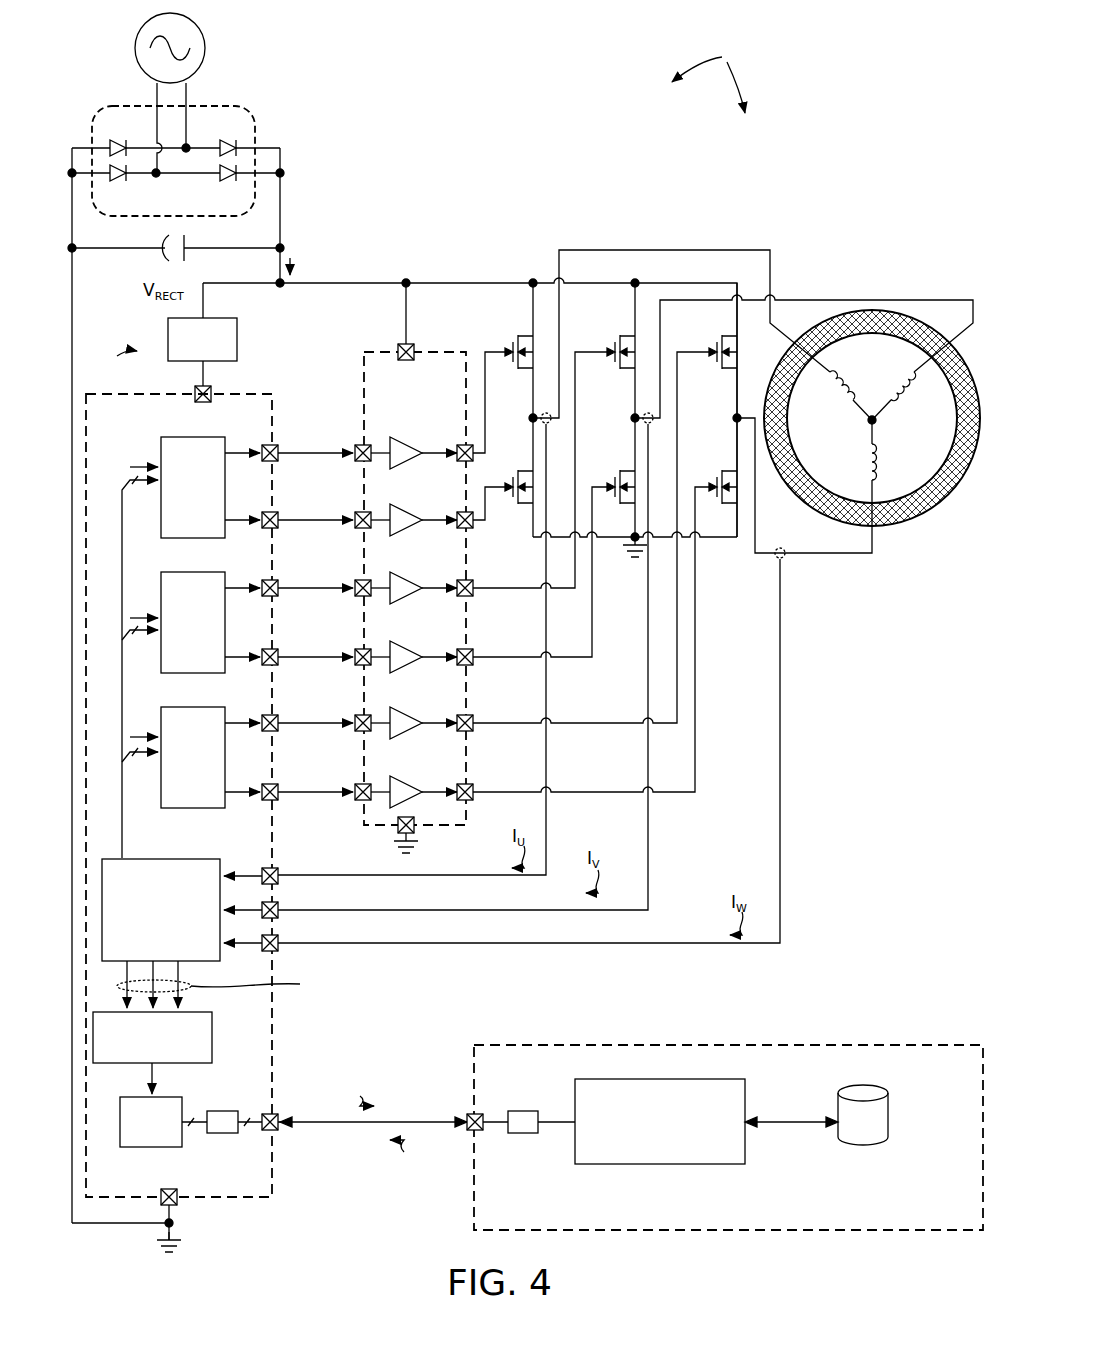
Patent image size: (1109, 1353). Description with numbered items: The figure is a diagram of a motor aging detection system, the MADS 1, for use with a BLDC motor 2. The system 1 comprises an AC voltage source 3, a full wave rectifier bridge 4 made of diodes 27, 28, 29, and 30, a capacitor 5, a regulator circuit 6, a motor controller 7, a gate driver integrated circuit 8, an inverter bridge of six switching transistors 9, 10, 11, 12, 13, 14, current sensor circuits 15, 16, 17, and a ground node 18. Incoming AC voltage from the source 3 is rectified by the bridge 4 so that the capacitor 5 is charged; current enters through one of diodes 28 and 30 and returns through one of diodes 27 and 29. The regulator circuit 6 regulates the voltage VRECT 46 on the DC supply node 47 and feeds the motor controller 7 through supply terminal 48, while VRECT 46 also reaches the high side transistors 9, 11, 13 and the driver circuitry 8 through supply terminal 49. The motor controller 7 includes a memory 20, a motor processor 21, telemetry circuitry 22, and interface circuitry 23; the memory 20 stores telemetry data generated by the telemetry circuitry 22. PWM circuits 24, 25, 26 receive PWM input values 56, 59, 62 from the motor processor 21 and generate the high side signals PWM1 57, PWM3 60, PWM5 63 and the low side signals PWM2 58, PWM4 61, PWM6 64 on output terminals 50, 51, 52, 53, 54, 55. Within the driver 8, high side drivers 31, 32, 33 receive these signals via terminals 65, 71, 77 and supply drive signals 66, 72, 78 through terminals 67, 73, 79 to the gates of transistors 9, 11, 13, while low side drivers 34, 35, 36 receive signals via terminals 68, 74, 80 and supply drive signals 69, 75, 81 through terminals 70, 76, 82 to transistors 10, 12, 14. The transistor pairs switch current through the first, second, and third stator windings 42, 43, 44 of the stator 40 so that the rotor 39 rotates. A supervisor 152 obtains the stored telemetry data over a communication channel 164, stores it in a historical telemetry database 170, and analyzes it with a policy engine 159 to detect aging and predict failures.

The MADS 1 is at (708, 75).
The BLDC motor 2 is at (872, 425).
The AC voltage source 3 is at (206, 50).
The full wave rectifier bridge 4 is at (255, 125).
The capacitor 5 is at (184, 245).
The regulator circuit 6 is at (202, 340).
The motor controller 7 is at (256, 1200).
The gate driver integrated circuit 8 is at (449, 350).
The high side N-channel field effect transistor 9 is at (525, 334).
The low side N-channel field effect transistor 10 is at (523, 470).
The high side N-channel field effect transistor 11 is at (627, 334).
The low side N-channel field effect transistor 12 is at (625, 470).
The high side N-channel field effect transistor 13 is at (721, 336).
The low side N-channel field effect transistor 14 is at (721, 472).
The current sensor circuit 15 is at (552, 425).
The current sensor circuit 16 is at (654, 425).
The current sensor circuit 17 is at (786, 560).
The ground node 18 is at (176, 1196).
The memory 20 is at (143, 1148).
The motor processor 21 is at (267, 939).
The telemetry circuitry 22 is at (212, 1040).
The interface circuitry 23 is at (226, 1111).
The PWM circuit 24 is at (176, 437).
The PWM circuit 25 is at (176, 572).
The PWM circuit 26 is at (176, 707).
The diode 27 is at (118, 141).
The diode 28 is at (228, 141).
The diode 29 is at (118, 182).
The diode 30 is at (228, 182).
The high side driver 31 is at (402, 437).
The high side driver 32 is at (402, 572).
The high side driver 33 is at (402, 707).
The low side driver 34 is at (402, 504).
The low side driver 35 is at (402, 641).
The low side driver 36 is at (402, 775).
The rotor 39 is at (835, 308).
The stator 40 is at (905, 325).
The first stator winding 42 is at (840, 397).
The second stator winding 43 is at (902, 397).
The third stator winding 44 is at (866, 460).
The voltage VRECT 46 is at (292, 266).
The DC supply node 47 is at (442, 283).
The supply terminal 48 is at (211, 392).
The supply terminal 49 is at (398, 350).
The PWM output terminal 50 is at (264, 445).
The PWM output terminal 51 is at (264, 512).
The PWM output terminal 52 is at (264, 580).
The PWM output terminal 53 is at (264, 649).
The PWM output terminal 54 is at (264, 715).
The PWM output terminal 55 is at (264, 783).
The PWM input value 56 is at (140, 466).
The high side PWM switch control signal PWM1 57 is at (314, 441).
The low side PWM switch control signal PWM2 58 is at (314, 509).
The PWM input value 59 is at (140, 617).
The high side PWM switch control signal PWM3 60 is at (314, 578).
The low side PWM switch control signal PWM4 61 is at (314, 647).
The PWM input value 62 is at (140, 736).
The high side PWM switch control signal PWM5 63 is at (314, 713).
The low side PWM switch control signal PWM6 64 is at (314, 781).
The terminal 65 is at (357, 445).
The drive signal 66 is at (434, 443).
The terminal 67 is at (458, 445).
The terminal 68 is at (357, 512).
The drive signal 69 is at (434, 510).
The terminal 70 is at (458, 512).
The terminal 71 is at (357, 580).
The drive signal 72 is at (434, 578).
The terminal 73 is at (458, 580).
The terminal 74 is at (357, 649).
The drive signal 75 is at (434, 646).
The terminal 76 is at (458, 648).
The terminal 77 is at (357, 715).
The drive signal 78 is at (434, 712).
The terminal 79 is at (458, 714).
The terminal 80 is at (357, 783).
The drive signal 81 is at (434, 780).
The terminal 82 is at (458, 782).
The supervisor 152 is at (824, 1045).
The policy engine 159 is at (635, 1165).
The communication channel 164 is at (310, 1128).
The historical telemetry database 170 is at (863, 1146).